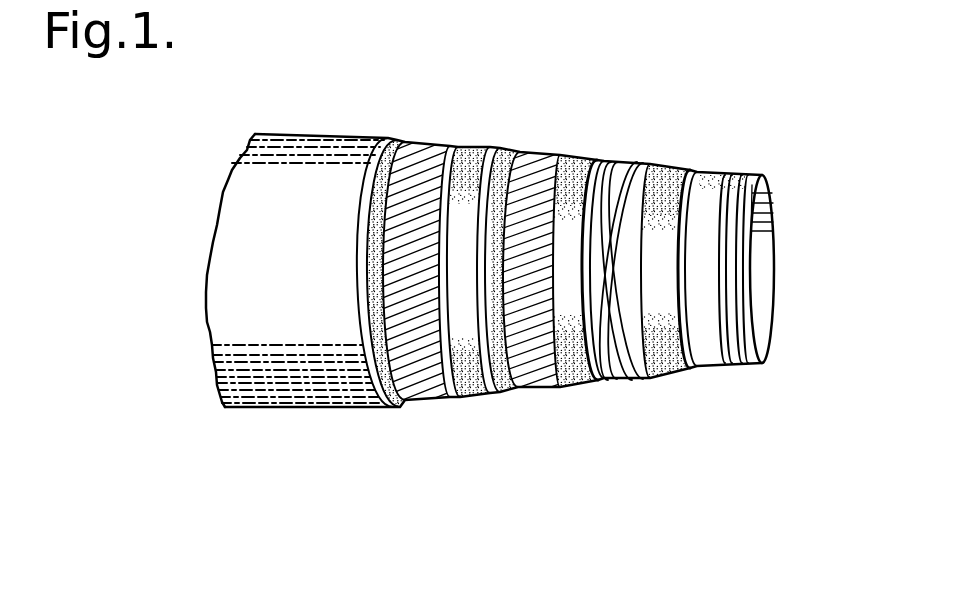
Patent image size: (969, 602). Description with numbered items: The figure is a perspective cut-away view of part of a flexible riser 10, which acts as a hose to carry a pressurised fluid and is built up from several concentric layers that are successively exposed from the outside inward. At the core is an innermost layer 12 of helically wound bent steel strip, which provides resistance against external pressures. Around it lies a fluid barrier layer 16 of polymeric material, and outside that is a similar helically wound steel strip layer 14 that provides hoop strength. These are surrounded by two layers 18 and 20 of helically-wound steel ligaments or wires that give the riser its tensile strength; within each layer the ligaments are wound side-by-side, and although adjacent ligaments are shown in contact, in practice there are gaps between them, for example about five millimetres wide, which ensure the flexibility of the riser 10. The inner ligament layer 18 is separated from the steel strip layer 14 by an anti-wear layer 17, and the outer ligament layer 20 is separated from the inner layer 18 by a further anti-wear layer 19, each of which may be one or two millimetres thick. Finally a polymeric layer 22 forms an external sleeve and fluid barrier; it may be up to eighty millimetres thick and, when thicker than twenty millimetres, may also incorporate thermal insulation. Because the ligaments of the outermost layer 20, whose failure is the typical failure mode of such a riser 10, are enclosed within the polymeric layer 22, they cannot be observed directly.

The flexible riser 10 is at (458, 129).
The innermost layer 12 is at (720, 197).
The helically wound steel strip layer 14 is at (615, 178).
The fluid barrier layer 16 is at (665, 193).
The anti-wear layer 17 is at (578, 378).
The inner layer of helically-wound steel ligaments or wires 18 is at (537, 368).
The anti-wear layer 19 is at (468, 380).
The outer layer of helically-wound steel ligaments or wires 20 is at (428, 388).
The polymeric layer 22 is at (313, 372).